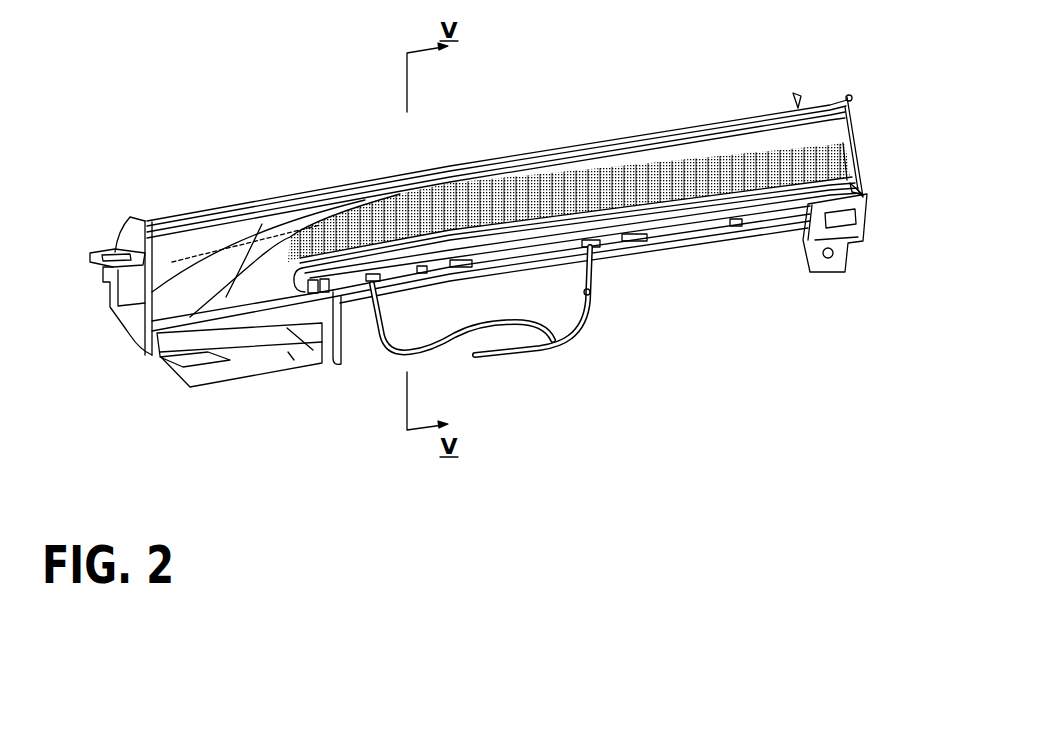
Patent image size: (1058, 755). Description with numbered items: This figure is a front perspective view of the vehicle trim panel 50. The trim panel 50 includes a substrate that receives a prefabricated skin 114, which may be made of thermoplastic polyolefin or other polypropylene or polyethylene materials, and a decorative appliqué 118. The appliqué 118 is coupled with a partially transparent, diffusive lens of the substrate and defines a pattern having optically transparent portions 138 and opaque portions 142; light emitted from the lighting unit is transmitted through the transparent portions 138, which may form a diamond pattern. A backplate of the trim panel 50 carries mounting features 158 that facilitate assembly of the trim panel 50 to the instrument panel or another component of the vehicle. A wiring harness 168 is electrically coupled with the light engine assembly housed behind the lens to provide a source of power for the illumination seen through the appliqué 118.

The trim panel 50 is at (474, 241).
The skin 114 is at (248, 233).
The appliqué 118 is at (567, 193).
The transparent portions 138 is at (470, 213).
The opaque portions 142 is at (680, 177).
The mounting features 158 is at (125, 288).
The wiring harness 168 is at (448, 340).